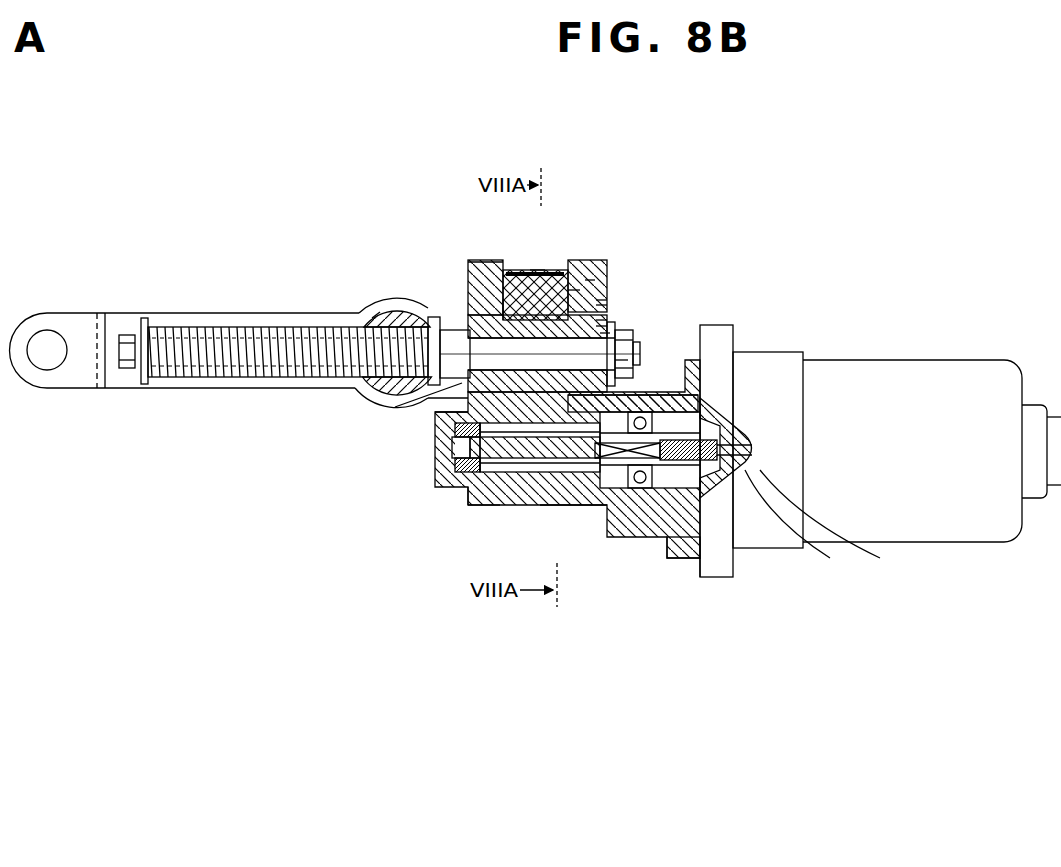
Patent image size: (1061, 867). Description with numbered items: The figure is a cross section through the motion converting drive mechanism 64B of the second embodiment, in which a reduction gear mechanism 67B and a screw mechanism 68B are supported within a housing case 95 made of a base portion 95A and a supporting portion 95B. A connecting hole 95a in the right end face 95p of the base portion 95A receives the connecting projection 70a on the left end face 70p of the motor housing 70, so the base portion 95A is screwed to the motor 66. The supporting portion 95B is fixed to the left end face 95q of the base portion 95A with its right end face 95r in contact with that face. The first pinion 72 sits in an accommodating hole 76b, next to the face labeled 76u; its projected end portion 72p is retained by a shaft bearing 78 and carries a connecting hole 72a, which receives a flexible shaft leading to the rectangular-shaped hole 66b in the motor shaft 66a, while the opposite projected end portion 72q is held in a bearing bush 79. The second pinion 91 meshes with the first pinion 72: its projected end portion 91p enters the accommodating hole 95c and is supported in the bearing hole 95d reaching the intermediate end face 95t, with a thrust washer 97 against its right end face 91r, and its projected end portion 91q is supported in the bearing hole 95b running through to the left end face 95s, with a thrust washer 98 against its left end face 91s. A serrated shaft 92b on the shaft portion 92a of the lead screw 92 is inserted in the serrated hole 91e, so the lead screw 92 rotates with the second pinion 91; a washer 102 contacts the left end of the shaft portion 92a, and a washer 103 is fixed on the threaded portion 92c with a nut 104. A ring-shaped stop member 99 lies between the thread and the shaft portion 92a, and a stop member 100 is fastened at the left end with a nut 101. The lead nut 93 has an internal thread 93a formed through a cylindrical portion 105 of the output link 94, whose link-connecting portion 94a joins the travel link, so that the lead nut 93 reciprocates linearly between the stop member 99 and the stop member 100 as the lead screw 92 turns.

The motion converting drive mechanism 64B is at (672, 223).
The motor 66 is at (932, 318).
The motor shaft 66a is at (802, 525).
The rectangular-shaped hole 66b is at (835, 525).
The reduction gear mechanism 67B is at (420, 490).
The screw mechanism 68B is at (384, 284).
The motor housing 70 is at (965, 370).
The connecting projection 70a is at (752, 455).
The left end face 70p is at (716, 582).
The first pinion 72 is at (516, 456).
The connecting hole 72a is at (592, 470).
The projected end portion 72p is at (630, 436).
The projected end portion 72q is at (458, 452).
The accommodating hole 76b is at (531, 470).
The bushing end 76u is at (480, 462).
The shaft bearing 78 is at (675, 462).
The bearing bush 79 is at (455, 428).
The second pinion 91 is at (548, 300).
The serrated hole 91e is at (601, 304).
The projected end portion 91p is at (605, 326).
The projected end portion 91q is at (512, 300).
The right end face 91r is at (588, 280).
The left end face 91s is at (501, 300).
The lead screw 92 is at (244, 325).
The shaft portion 92a is at (434, 318).
The serrated shaft 92b is at (608, 333).
The threaded portion 92c is at (628, 361).
The lead nut 93 is at (318, 313).
The internal thread 93a is at (388, 335).
The output link 94 is at (192, 313).
The link-connecting portion 94a is at (57, 318).
The housing case 95 is at (556, 568).
The base portion 95A is at (560, 498).
The supporting portion 95B is at (435, 418).
The connecting hole 95a is at (652, 436).
The bearing hole 95b is at (400, 386).
The accommodating hole 95c is at (569, 290).
The bearing hole 95d is at (606, 320).
The right end face 95p is at (690, 556).
The left end face 95q is at (497, 472).
The right end face 95r is at (482, 500).
The left end face 95s is at (470, 300).
The intermediate end face 95t is at (612, 390).
The thrust washer 97 is at (600, 300).
The thrust washer 98 is at (545, 272).
The stop member 99 is at (451, 338).
The stop member 100 is at (144, 320).
The nut 101 is at (131, 333).
The washer 102 is at (453, 338).
The washer 103 is at (618, 340).
The nut 104 is at (624, 352).
The cylindrical portion 105 is at (372, 318).